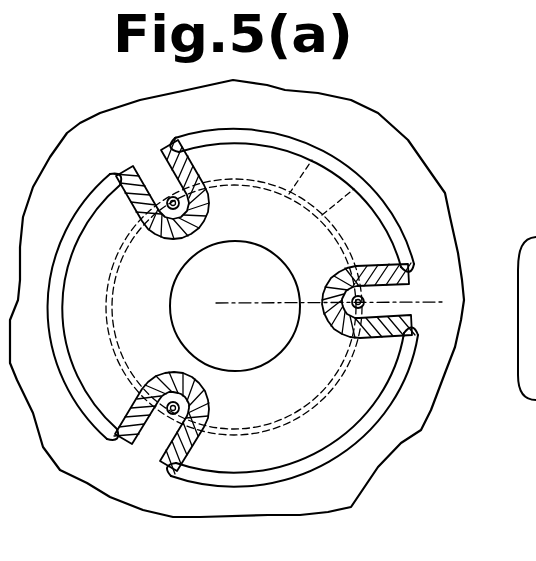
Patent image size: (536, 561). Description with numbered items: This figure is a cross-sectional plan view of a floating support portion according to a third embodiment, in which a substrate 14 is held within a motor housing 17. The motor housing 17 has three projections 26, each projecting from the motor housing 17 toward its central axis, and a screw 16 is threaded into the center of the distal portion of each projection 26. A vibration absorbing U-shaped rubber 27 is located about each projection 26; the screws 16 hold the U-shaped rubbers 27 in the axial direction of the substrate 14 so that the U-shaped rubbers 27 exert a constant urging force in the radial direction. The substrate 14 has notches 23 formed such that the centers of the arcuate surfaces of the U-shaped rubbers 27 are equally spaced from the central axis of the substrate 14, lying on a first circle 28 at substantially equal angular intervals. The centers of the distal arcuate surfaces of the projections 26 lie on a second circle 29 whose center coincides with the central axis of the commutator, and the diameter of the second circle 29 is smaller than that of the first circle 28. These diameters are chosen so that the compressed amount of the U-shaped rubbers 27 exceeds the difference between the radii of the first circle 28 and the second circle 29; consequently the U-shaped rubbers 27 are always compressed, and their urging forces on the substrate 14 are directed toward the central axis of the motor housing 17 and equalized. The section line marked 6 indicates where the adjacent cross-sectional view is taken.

The section line 6- 6 is at (435, 301).
The substrate 14 is at (326, 437).
The screw 16 is at (185, 202).
The motor housing 17 is at (400, 442).
The notch 23 is at (144, 184).
The projection 26 is at (168, 153).
The U-shaped rubber 27 is at (168, 228).
The first circle 28 is at (368, 182).
The second circle 29 is at (321, 158).